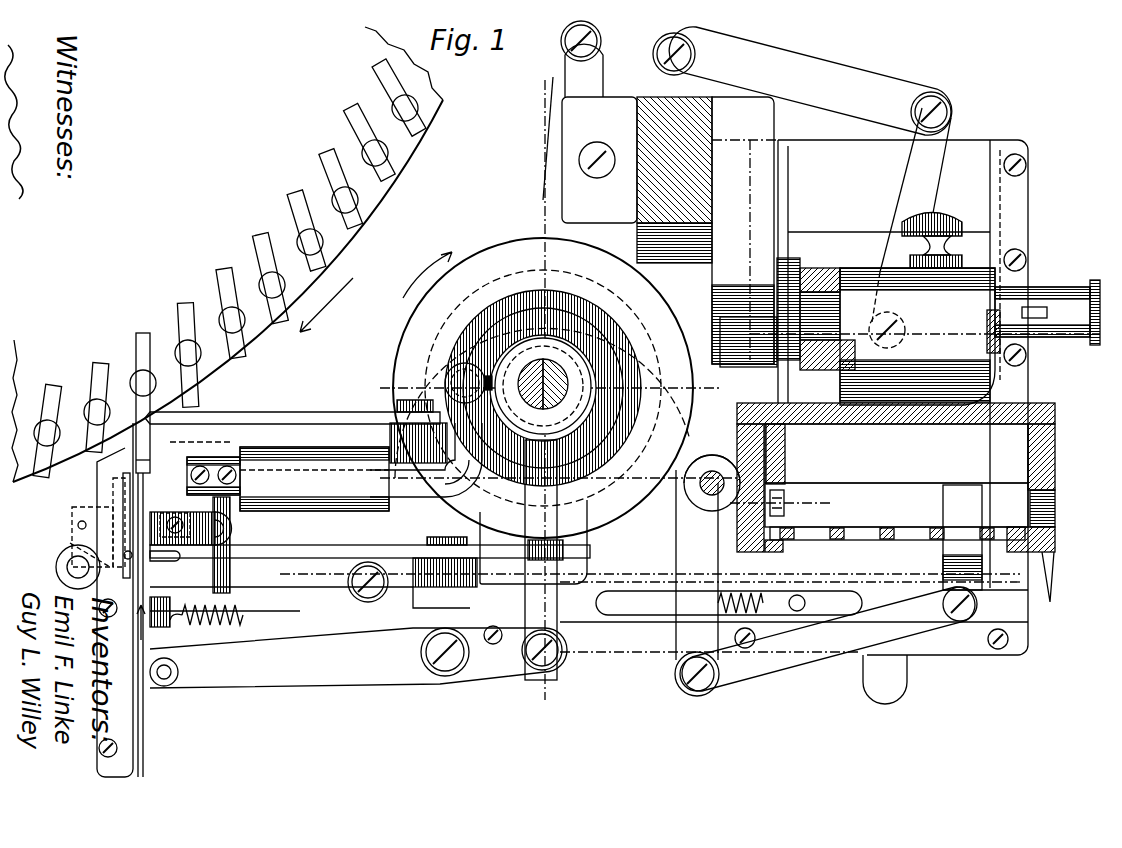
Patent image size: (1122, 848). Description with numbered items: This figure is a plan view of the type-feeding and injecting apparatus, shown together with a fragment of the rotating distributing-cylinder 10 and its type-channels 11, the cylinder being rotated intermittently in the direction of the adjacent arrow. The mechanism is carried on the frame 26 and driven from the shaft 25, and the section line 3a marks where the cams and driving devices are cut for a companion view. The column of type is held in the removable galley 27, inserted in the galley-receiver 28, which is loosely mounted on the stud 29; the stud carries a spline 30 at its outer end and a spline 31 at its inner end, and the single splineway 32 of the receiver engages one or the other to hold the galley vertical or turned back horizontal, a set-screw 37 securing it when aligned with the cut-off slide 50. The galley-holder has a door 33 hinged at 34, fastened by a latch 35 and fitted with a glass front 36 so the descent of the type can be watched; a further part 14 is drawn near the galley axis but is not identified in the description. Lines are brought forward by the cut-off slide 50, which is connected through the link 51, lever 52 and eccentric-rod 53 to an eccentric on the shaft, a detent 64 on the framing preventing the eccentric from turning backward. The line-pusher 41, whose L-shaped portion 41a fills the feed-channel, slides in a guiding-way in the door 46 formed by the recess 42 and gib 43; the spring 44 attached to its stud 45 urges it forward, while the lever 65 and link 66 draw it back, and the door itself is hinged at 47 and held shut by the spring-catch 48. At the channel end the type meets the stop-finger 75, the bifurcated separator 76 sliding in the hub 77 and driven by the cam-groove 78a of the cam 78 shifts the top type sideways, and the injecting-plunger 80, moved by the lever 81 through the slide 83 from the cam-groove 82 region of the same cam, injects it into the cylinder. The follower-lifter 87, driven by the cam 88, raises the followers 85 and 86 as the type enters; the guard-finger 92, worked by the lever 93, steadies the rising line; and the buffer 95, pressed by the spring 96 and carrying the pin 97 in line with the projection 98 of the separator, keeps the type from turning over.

The section line 3a- 3a is at (541, 393).
The distributing-cylinder 10 is at (227, 254).
The type-channels 11 is at (348, 217).
The shaft 14 is at (640, 501).
The shaft 25 is at (543, 386).
The frame 26 is at (640, 205).
The galley 27 is at (888, 430).
The galley-receiver 28 is at (1048, 455).
The stud 29 is at (1072, 337).
The spline 30 is at (1070, 312).
The spline 31 is at (822, 330).
The splineway 32 is at (945, 337).
The door 33 is at (1055, 540).
The hinge 34 is at (715, 495).
The latch 35 is at (1052, 578).
The glass front 36 is at (910, 517).
The set-screw 37 is at (946, 215).
The line-pusher 41 is at (874, 600).
The L-shaped portion 41a is at (962, 537).
The recess 42 is at (1006, 609).
The gib 43 is at (956, 645).
The spring 44 is at (743, 596).
The stud 45 is at (795, 596).
The door 46 is at (296, 590).
The hinge 47 is at (74, 568).
The spring-catch 48 is at (885, 679).
The cut-off slide 50 is at (917, 324).
The link 51 is at (910, 228).
The lever 52 is at (810, 81).
The eccentric-rod 53 is at (628, 59).
The detent 64 is at (355, 440).
The lever 65 is at (708, 557).
The link 66 is at (712, 674).
The stop-finger 75 is at (172, 516).
The separator 76 is at (222, 458).
The hub 77 is at (262, 467).
The cam 78 is at (408, 330).
The cam-groove 78a is at (460, 347).
The injecting-plunger 80 is at (158, 686).
The lever 81 is at (358, 657).
The wheel rim 82 is at (607, 500).
The slide 83 is at (544, 560).
The follower 85 is at (140, 337).
The follower 86 is at (184, 315).
The follower-lifter 87 is at (312, 412).
The cam 88 is at (565, 348).
The guard-finger 92 is at (205, 527).
The lever 93 is at (373, 546).
The buffer 95 is at (126, 492).
The spring 96 is at (78, 522).
The pin 97 is at (124, 554).
The projection 98 is at (172, 563).